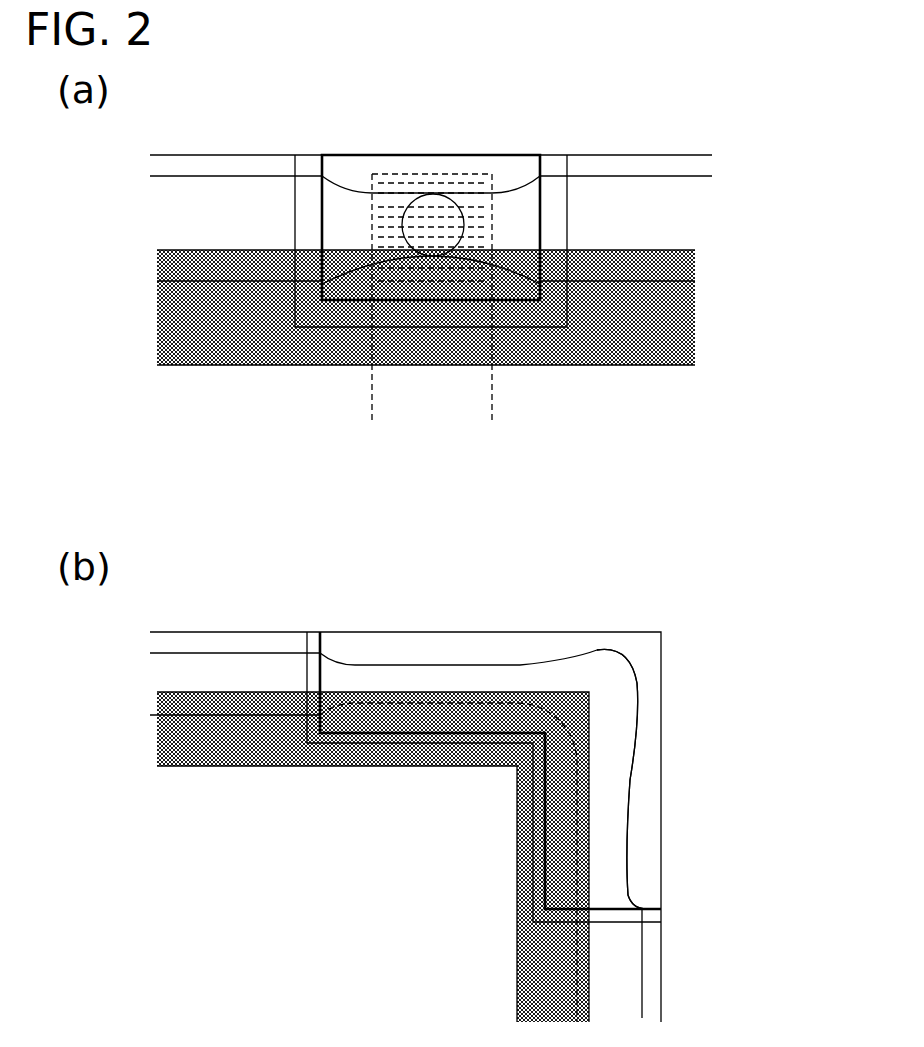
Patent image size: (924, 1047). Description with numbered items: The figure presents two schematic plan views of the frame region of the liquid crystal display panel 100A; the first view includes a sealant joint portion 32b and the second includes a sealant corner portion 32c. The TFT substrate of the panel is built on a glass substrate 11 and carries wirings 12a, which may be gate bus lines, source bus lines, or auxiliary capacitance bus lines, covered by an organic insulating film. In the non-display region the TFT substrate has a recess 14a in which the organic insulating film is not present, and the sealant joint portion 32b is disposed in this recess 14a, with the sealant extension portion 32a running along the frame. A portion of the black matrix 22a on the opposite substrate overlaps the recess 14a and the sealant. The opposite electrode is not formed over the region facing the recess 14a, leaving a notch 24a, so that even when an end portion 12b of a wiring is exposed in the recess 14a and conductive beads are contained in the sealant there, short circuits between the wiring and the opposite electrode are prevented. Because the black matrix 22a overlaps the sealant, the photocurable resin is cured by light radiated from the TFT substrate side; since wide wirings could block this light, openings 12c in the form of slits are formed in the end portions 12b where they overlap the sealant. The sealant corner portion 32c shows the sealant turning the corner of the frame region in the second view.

The glass substrate 11 is at (600, 152).
The wirings 12a is at (492, 400).
The end portions of wirings 12b is at (492, 237).
The openings (slits) 12c is at (495, 207).
The recess 14a is at (490, 136).
The black matrix 22a is at (700, 300).
The notch in the opposite electrode 24a is at (294, 200).
The sealant extension portion 32a is at (232, 193).
The sealant joint portion 32b is at (352, 200).
The sealant corner portion 32c is at (625, 682).
The liquid crystal display panel 100A is at (692, 126).